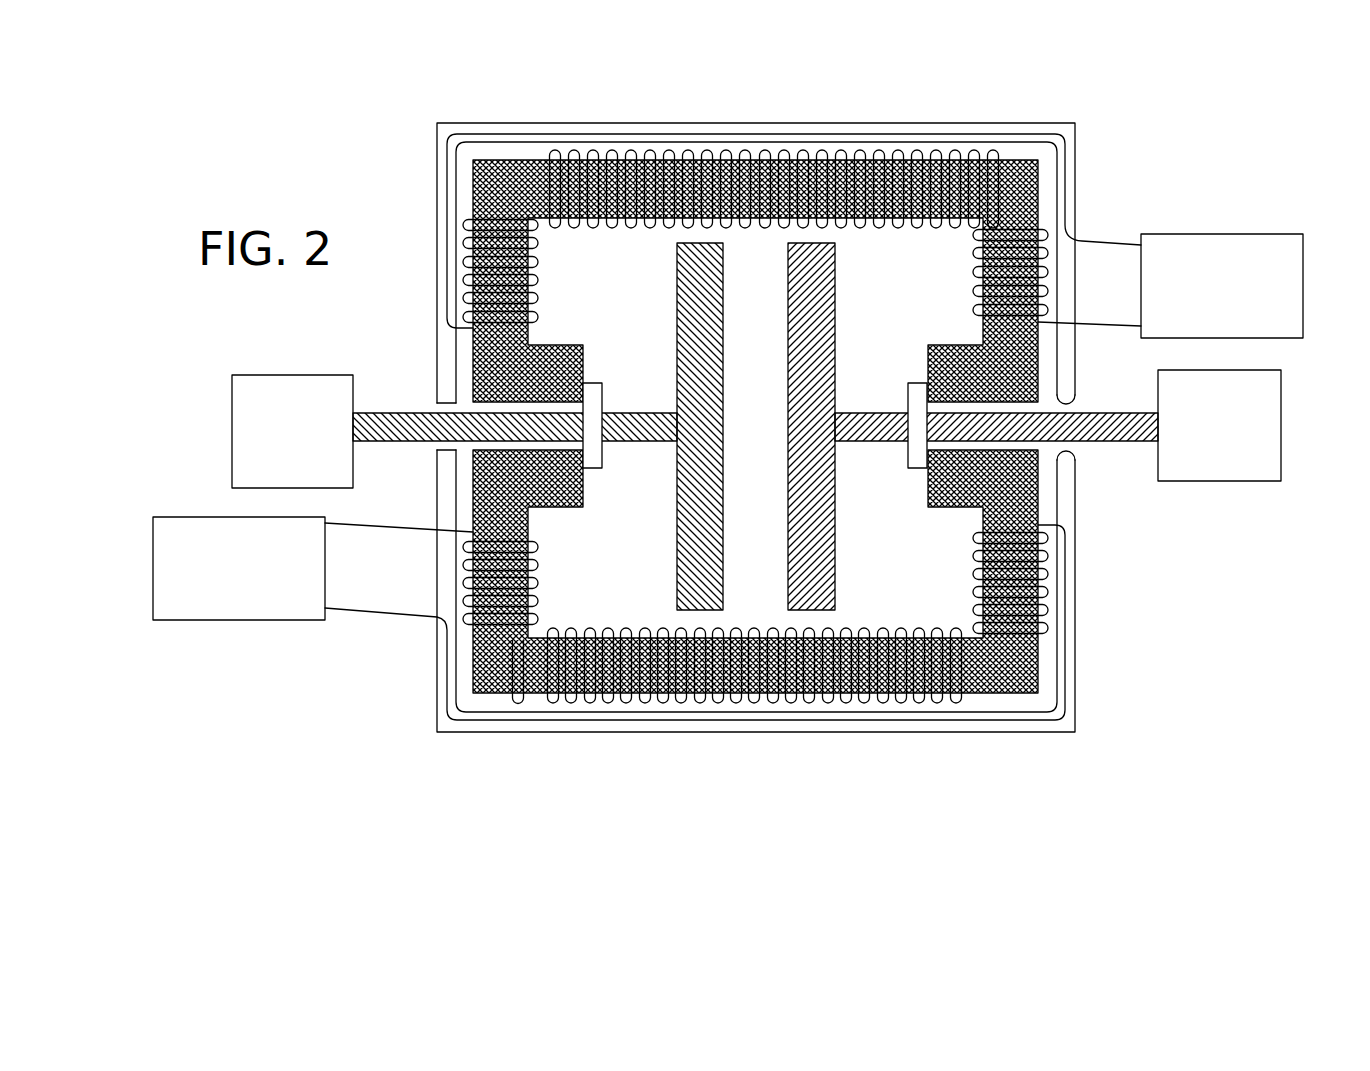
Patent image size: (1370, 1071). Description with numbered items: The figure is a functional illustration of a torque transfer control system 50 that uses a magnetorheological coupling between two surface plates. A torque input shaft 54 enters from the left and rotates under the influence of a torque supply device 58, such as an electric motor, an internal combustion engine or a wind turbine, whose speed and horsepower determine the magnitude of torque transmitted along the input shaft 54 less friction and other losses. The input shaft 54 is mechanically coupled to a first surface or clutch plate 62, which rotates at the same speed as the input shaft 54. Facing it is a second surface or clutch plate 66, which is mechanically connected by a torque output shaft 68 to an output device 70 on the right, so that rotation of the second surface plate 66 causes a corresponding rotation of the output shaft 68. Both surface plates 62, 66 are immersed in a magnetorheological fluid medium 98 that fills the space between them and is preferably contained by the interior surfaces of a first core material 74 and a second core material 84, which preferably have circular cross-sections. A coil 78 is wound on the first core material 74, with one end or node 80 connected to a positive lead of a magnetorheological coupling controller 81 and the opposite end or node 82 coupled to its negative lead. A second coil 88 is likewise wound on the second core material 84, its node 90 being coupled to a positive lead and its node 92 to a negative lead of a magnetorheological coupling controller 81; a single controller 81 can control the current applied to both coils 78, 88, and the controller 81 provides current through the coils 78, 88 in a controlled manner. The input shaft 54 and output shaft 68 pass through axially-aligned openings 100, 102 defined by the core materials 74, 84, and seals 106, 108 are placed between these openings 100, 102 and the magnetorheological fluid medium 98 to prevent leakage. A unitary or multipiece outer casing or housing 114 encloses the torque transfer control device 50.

The torque transfer control system 50 is at (1117, 95).
The torque input shaft 54 is at (383, 410).
The torque supply device 58 is at (293, 373).
The first surface plate 62 is at (675, 258).
The second surface plate 66 is at (837, 262).
The torque output shaft 68 is at (1093, 440).
The output device 70 is at (1283, 426).
The first core material 74 is at (510, 162).
The coil 78 is at (683, 160).
The node 80 is at (1106, 240).
The magnetorheological coupling controller 81 is at (238, 622).
The node 82 is at (1104, 323).
The second core material 84 is at (502, 693).
The coil 88 is at (593, 702).
The node 90 is at (397, 530).
The node 92 is at (372, 613).
The magnetorheological fluid medium 98 is at (764, 437).
The opening 100 is at (470, 473).
The opening 102 is at (1025, 393).
The seal 106 is at (593, 382).
The seal 108 is at (917, 382).
The outer casing or housing 114 is at (788, 123).